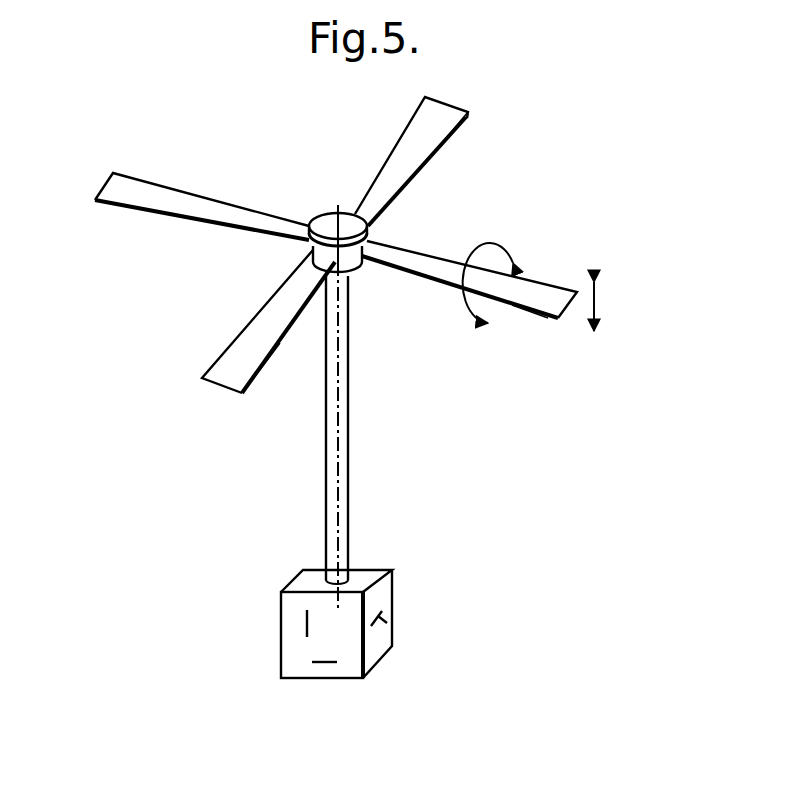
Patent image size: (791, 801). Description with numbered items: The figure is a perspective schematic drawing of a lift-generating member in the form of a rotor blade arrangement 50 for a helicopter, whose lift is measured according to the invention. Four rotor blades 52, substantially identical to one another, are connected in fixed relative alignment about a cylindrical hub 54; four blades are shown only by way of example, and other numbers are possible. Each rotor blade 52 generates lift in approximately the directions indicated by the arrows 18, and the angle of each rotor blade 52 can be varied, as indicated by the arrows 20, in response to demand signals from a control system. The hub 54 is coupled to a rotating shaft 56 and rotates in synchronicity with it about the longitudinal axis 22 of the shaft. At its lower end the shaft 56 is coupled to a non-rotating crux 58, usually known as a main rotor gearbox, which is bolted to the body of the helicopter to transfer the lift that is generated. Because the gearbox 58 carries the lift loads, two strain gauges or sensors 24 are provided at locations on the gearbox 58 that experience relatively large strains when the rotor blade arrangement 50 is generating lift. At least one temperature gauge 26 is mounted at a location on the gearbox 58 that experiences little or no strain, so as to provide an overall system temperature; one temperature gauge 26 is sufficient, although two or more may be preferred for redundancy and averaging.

The rotor blade arrangement 50 is at (187, 117).
The rotor blades 52 is at (145, 202).
The cylindrical hub 54 is at (328, 227).
The arrows 20 is at (491, 244).
The arrows 18 is at (594, 307).
The rotating shaft 56 is at (333, 464).
The longitudinal axis 22 is at (338, 508).
The temperature gauge 26 is at (303, 623).
The strain gauges 24 is at (386, 622).
The non-rotating crux 58 is at (372, 650).